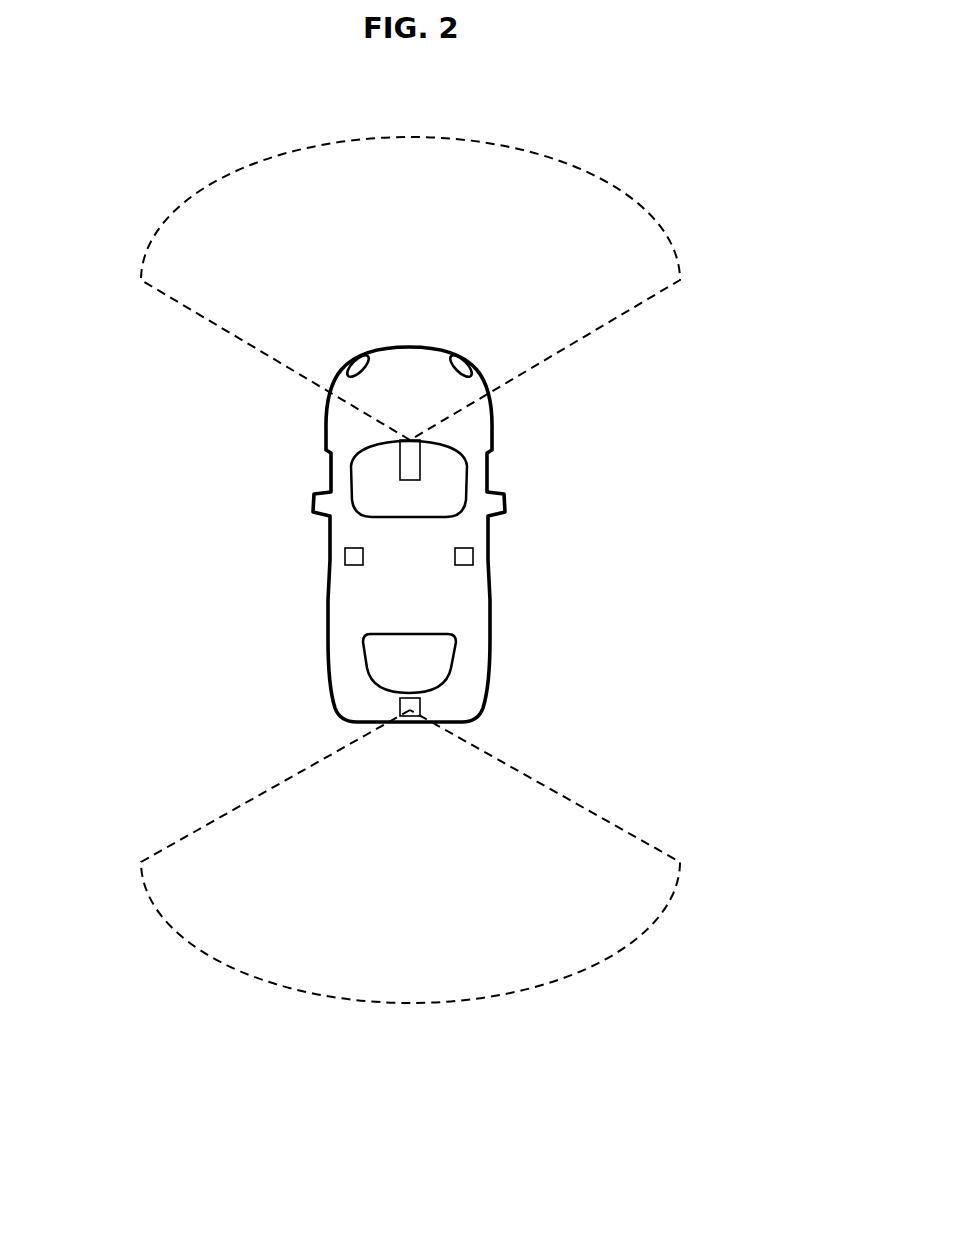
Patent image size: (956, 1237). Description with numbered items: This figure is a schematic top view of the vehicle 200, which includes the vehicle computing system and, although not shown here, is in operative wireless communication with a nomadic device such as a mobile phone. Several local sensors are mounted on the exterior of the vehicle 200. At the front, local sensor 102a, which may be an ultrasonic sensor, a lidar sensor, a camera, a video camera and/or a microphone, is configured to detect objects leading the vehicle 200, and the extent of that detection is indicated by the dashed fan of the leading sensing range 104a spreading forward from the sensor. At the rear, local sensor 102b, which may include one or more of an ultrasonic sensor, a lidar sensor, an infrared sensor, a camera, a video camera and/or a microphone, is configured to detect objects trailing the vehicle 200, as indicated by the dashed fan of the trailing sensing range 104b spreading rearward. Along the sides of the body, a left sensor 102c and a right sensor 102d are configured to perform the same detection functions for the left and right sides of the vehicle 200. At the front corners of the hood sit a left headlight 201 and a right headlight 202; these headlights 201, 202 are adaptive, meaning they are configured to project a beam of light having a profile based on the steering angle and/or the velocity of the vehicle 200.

The vehicle 200 is at (727, 131).
The left headlight 201 is at (354, 350).
The right headlight 202 is at (464, 350).
The local sensor 102a is at (410, 463).
The local sensor 102b is at (410, 713).
The left sensor 102c is at (355, 553).
The right sensor 102d is at (466, 552).
The leading sensing range 104a is at (659, 298).
The trailing sensing range 104b is at (660, 848).